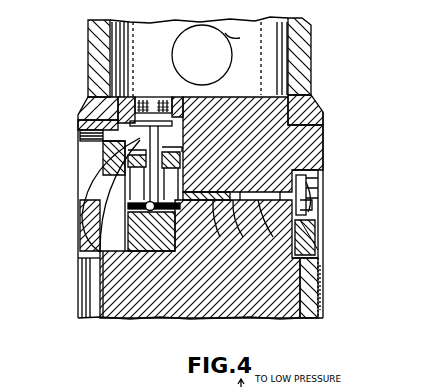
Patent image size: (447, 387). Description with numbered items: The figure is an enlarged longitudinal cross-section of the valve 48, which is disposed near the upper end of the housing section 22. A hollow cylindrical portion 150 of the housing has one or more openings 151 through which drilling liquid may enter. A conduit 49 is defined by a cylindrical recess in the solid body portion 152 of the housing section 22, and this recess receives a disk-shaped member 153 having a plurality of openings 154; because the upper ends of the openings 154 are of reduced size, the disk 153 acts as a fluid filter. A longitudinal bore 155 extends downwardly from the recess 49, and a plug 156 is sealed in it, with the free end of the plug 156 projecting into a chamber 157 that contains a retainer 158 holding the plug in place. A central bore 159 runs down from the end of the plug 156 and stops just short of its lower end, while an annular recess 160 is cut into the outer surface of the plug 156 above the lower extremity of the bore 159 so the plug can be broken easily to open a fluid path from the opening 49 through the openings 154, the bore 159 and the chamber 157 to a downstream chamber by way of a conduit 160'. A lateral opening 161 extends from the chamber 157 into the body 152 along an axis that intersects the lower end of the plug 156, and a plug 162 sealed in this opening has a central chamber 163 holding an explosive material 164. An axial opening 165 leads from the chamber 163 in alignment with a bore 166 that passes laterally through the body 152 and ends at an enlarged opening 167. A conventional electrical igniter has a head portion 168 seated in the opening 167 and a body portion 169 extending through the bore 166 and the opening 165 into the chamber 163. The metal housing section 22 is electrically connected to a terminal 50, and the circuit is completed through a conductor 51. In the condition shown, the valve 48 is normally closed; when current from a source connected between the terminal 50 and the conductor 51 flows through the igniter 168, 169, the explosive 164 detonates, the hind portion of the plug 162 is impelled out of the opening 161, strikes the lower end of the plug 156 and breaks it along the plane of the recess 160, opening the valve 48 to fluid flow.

The housing section 22 is at (332, 147).
The valve 48 is at (140, 186).
The conduit 49 is at (176, 97).
The terminal 50 is at (318, 178).
The conductor 51 is at (318, 243).
The hollow cylindrical portion 150 is at (285, 40).
The openings 151 is at (228, 31).
The solid body portion 152 is at (204, 97).
The disk-shaped member 153 is at (153, 121).
The openings 154 is at (127, 97).
The longitudinal bore 155 is at (118, 123).
The plug 156 is at (110, 140).
The chamber 157 is at (253, 144).
The retainer 158 is at (128, 196).
The central bore 159 is at (125, 146).
The annular recess 160 is at (84, 195).
The conduit 160' is at (62, 259).
The lateral opening 161 is at (230, 166).
The plug 162 is at (182, 215).
The central chamber 163 is at (253, 179).
The explosive material 164 is at (196, 192).
The axial opening 165 is at (235, 227).
The bore 166 is at (257, 227).
The enlarged opening 167 is at (320, 185).
The head portion 168 is at (318, 203).
The body portion 169 is at (278, 179).